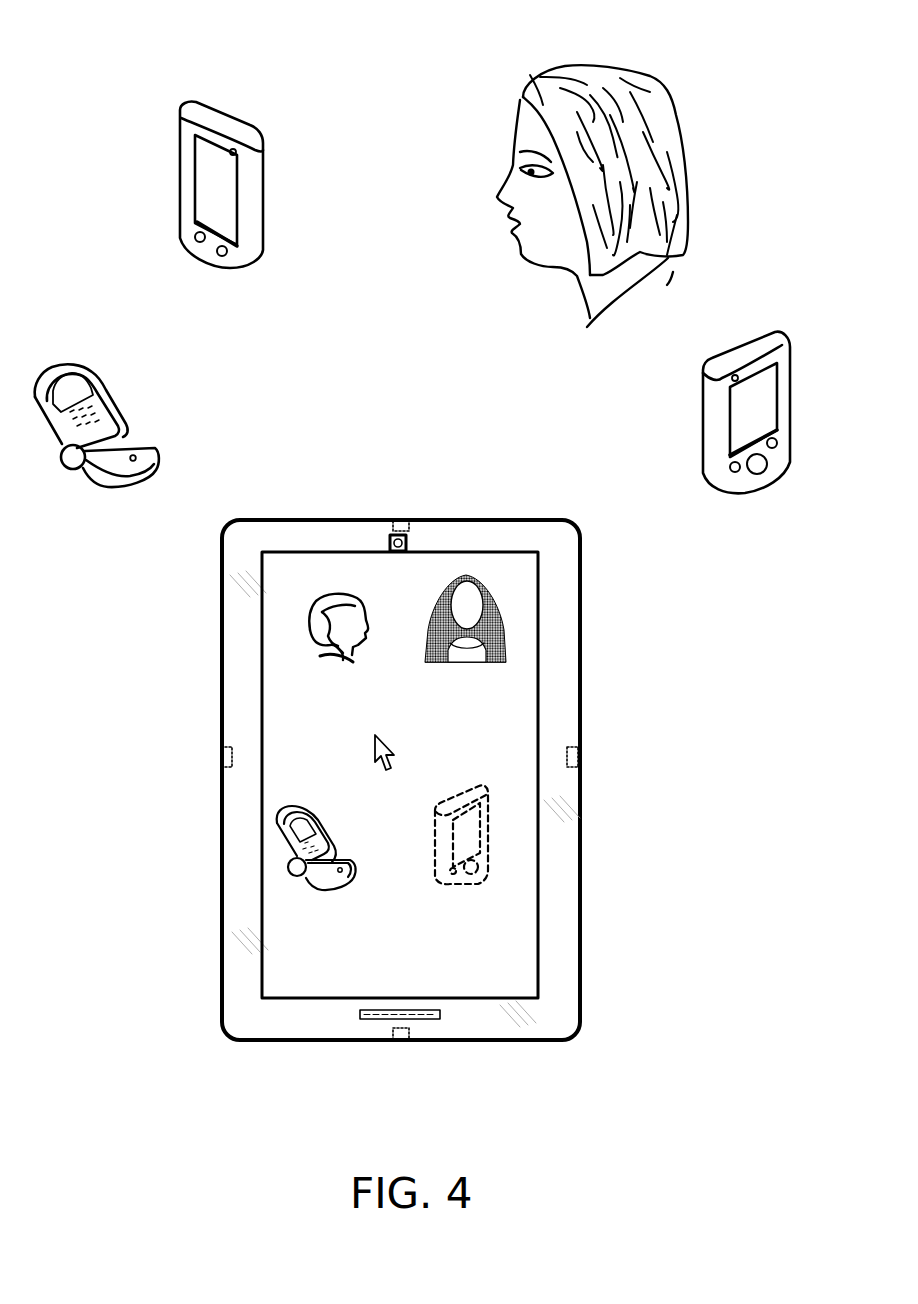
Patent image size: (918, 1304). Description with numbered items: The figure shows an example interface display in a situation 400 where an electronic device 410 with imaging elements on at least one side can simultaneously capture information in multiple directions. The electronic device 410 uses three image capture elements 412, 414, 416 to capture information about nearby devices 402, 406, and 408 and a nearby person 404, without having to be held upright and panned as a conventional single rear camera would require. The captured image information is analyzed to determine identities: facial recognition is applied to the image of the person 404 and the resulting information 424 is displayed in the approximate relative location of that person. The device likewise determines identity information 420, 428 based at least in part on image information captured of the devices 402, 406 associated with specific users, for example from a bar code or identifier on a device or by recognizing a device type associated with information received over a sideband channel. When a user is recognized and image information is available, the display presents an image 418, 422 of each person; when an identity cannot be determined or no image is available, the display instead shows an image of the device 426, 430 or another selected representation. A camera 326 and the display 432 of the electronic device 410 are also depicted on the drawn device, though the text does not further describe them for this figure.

The situation 400 is at (768, 95).
The device 402 is at (178, 162).
The person 404 is at (513, 130).
The device 406 is at (160, 457).
The device 408 is at (703, 413).
The electronic device 410 is at (217, 660).
The image capture element 412 is at (408, 530).
The camera 326 is at (407, 552).
The image capture element 414 is at (222, 757).
The image capture element 416 is at (575, 746).
The image of person 418 is at (313, 608).
The identity information 420 is at (281, 697).
The image of person 422 is at (505, 643).
The information 424 is at (514, 739).
The image of device 426 is at (288, 848).
The identity information 428 is at (273, 902).
The image of device 430 is at (460, 885).
The display 432 is at (537, 938).